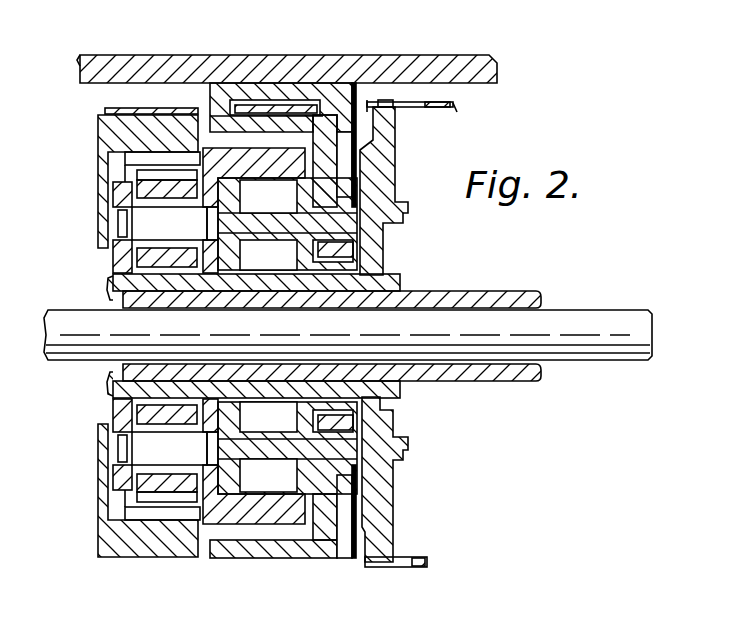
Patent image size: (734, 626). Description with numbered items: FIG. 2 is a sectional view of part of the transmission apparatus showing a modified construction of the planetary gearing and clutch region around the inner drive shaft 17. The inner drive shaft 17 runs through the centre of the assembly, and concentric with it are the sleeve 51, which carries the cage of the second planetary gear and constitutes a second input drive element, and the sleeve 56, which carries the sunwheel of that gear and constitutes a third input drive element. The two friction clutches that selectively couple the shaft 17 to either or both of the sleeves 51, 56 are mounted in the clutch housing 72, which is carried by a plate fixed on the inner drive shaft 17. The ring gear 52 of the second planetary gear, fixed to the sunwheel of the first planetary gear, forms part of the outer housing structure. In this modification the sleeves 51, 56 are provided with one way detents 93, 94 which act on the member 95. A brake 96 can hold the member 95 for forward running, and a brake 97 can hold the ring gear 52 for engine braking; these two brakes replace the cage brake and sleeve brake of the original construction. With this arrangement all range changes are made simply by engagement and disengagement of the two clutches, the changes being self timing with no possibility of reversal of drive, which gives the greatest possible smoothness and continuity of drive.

The inner drive shaft 17 is at (92, 352).
The sleeve 51 is at (468, 377).
The ring gear 52 is at (120, 127).
The sleeve 56 is at (399, 382).
The clutch housing 72 is at (457, 110).
The one way detent 93 is at (268, 255).
The one way detent 94 is at (268, 196).
The member 95 is at (326, 120).
The brake 96 is at (284, 105).
The brake 97 is at (117, 106).